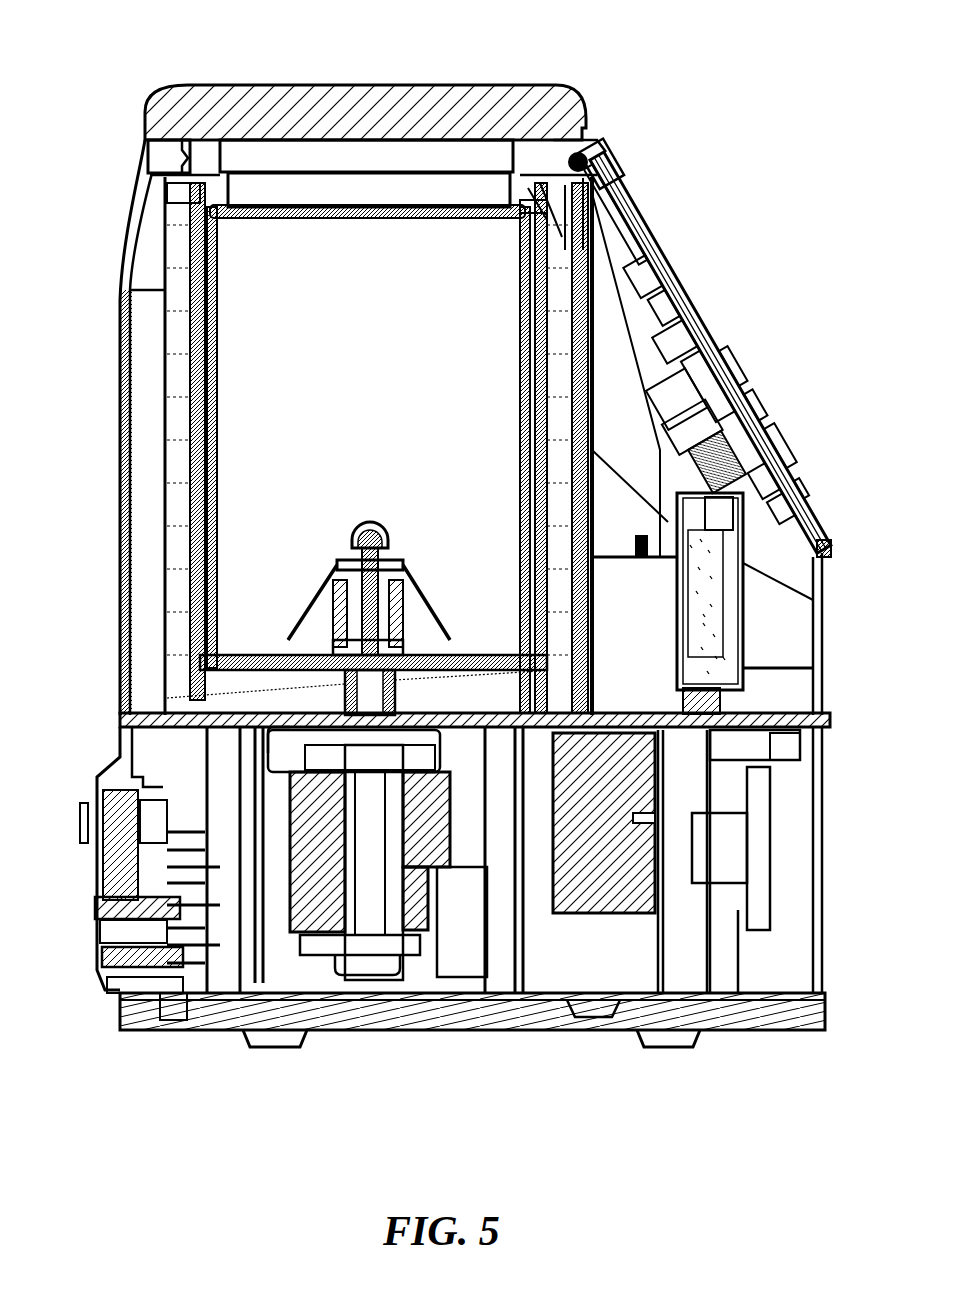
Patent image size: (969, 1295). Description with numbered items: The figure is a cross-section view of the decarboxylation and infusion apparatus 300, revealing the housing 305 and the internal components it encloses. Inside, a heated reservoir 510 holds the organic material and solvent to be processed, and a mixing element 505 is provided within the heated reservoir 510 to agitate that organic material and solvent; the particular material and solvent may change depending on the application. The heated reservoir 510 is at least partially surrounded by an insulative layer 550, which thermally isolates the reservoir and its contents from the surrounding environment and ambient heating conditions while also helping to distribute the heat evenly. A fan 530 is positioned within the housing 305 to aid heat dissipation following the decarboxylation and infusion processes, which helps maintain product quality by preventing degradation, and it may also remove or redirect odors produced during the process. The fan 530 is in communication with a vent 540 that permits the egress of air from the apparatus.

The decarboxylation and infusion apparatus 300 is at (232, 42).
The housing 305 is at (122, 388).
The mixing element 505 is at (370, 517).
The heated reservoir 510 is at (217, 325).
The fan 530 is at (590, 608).
The vent 540 is at (737, 363).
The insulative layer 550 is at (215, 428).